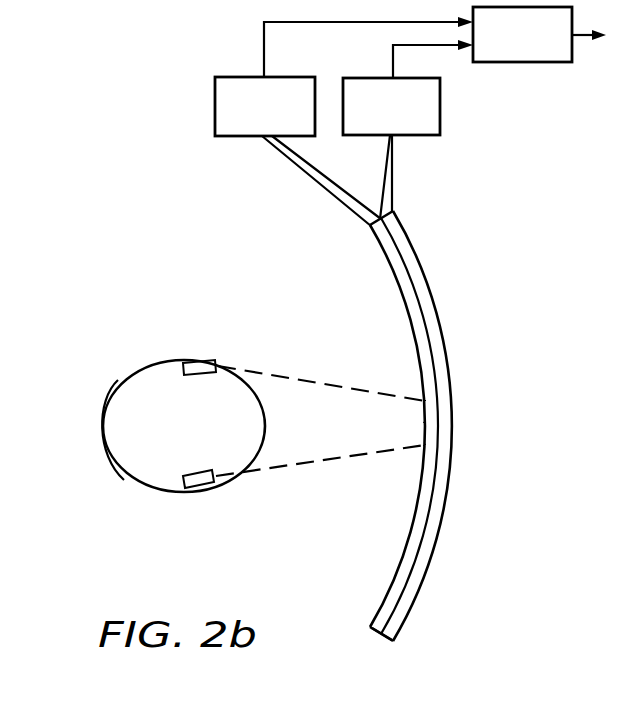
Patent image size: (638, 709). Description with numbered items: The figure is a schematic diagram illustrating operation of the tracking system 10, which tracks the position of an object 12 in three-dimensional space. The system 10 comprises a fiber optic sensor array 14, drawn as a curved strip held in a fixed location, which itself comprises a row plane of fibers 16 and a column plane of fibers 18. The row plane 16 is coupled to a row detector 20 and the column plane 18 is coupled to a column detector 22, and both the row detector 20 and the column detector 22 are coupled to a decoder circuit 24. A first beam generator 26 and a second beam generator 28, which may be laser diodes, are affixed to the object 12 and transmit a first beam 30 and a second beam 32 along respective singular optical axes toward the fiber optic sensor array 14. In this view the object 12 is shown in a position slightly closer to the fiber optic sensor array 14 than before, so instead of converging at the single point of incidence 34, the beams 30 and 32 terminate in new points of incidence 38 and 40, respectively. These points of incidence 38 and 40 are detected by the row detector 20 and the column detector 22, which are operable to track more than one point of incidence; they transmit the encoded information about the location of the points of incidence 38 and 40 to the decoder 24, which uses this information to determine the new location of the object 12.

The tracking system 10 is at (60, 170).
The object 12 is at (142, 473).
The fiber optic sensor array 14 is at (440, 525).
The row plane of fibers 16 is at (370, 629).
The column plane of fibers 18 is at (383, 641).
The row detector 20 is at (214, 102).
The column detector 22 is at (444, 104).
The decoder circuit 24 is at (542, 63).
The first beam generator 26 is at (200, 488).
The second beam generator 28 is at (201, 361).
The first beam 30 is at (281, 465).
The second beam 32 is at (282, 379).
The single point of incidence 34 is at (412, 423).
The new point of incidence 38 is at (418, 453).
The new point of incidence 40 is at (418, 394).